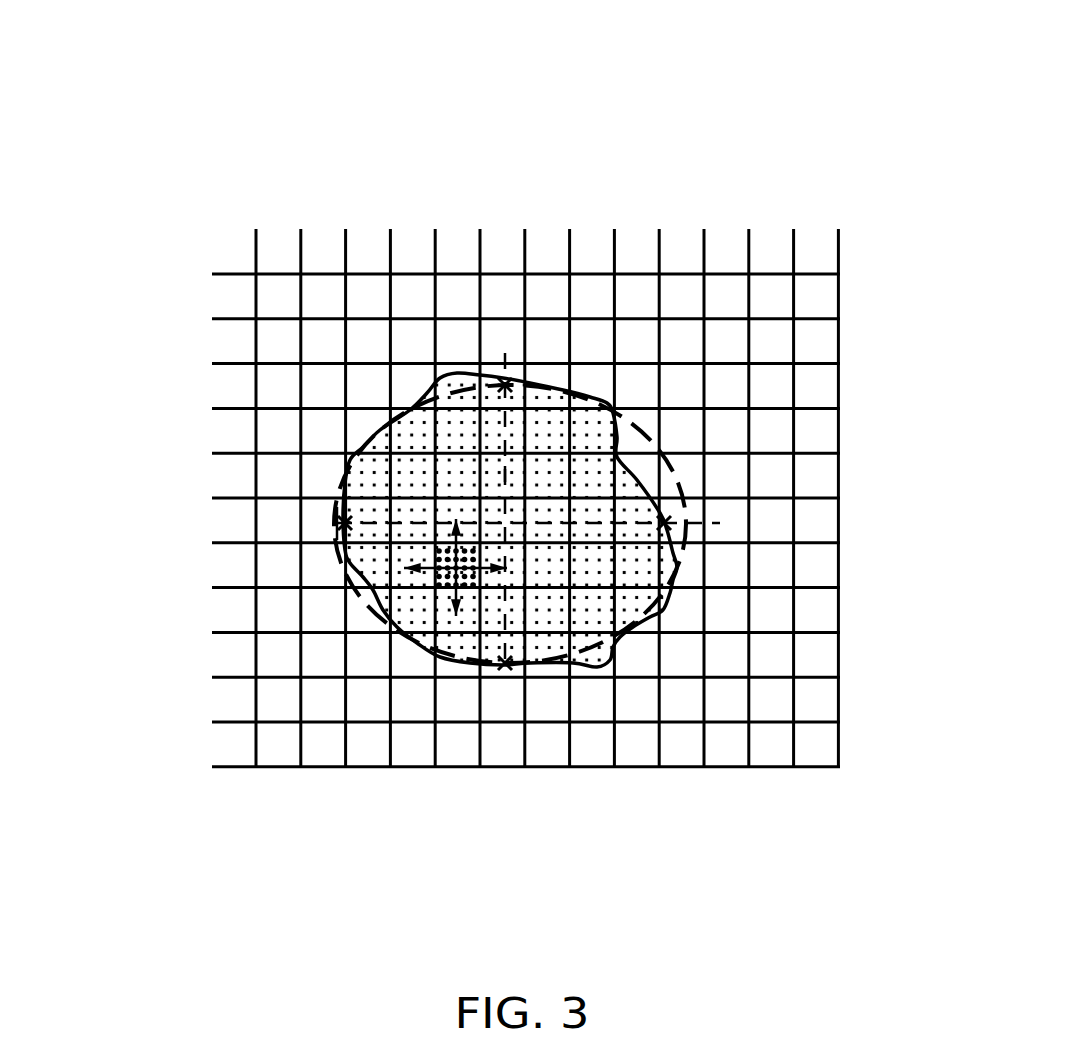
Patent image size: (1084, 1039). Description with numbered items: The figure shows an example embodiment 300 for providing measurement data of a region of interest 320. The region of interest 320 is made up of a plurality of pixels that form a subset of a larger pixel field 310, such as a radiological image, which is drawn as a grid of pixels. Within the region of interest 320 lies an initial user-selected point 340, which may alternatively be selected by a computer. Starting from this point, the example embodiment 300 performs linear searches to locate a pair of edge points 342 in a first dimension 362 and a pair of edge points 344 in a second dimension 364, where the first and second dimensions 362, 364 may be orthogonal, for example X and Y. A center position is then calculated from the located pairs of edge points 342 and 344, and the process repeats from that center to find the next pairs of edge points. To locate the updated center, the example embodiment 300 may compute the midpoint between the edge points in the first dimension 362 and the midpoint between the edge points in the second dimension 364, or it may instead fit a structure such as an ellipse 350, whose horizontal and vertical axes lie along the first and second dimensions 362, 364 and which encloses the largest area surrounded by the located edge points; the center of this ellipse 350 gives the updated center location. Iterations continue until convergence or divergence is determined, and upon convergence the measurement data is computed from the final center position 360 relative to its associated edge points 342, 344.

The example embodiment 300 is at (427, 51).
The pixel field 310 is at (512, 212).
The region of interest 320 is at (343, 460).
The user-selected point 340 is at (425, 589).
The pair of edge points 342 is at (664, 522).
The pair of edge points 344 is at (507, 383).
The ellipse 350 is at (647, 407).
The final center position 360 is at (510, 530).
The first dimension 362 is at (603, 528).
The second dimension 364 is at (505, 475).